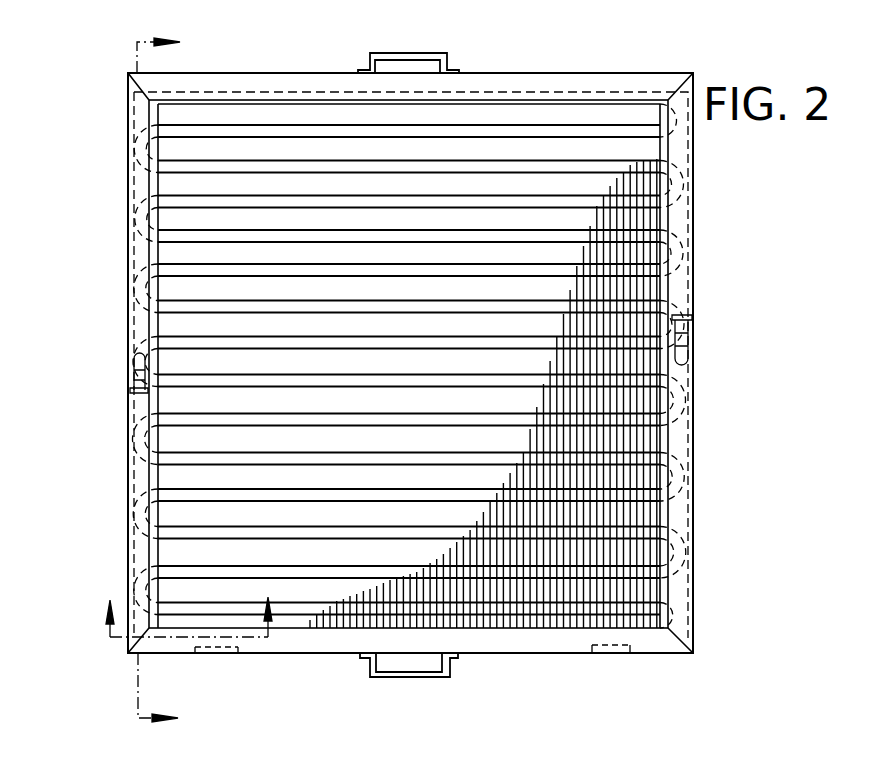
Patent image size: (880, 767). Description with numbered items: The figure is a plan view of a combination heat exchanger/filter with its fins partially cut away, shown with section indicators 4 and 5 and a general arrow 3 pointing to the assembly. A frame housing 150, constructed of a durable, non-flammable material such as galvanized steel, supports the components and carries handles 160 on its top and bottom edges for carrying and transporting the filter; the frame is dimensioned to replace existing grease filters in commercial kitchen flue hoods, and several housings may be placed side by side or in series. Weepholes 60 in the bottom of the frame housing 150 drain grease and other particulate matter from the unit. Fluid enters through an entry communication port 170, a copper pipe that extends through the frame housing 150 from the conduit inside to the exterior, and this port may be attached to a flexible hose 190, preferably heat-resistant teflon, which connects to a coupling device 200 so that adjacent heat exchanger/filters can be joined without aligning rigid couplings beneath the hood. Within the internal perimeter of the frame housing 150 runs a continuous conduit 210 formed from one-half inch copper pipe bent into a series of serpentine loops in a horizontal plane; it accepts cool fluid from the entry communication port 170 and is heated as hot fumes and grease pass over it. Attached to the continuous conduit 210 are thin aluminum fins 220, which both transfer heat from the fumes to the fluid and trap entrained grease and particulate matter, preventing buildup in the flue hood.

The heat exchanger assembly 3 is at (100, 140).
The section line 4- 4 is at (155, 382).
The section line 5- 5 is at (193, 626).
The weepholes 60 is at (217, 653).
The frame housing 150 is at (620, 72).
The handles 160 is at (447, 53).
The entry communication port 170 is at (140, 363).
The flexible hose 190 is at (130, 378).
The coupling device 200 is at (140, 400).
The continuous conduit 210 is at (195, 300).
The fins 220 is at (580, 622).